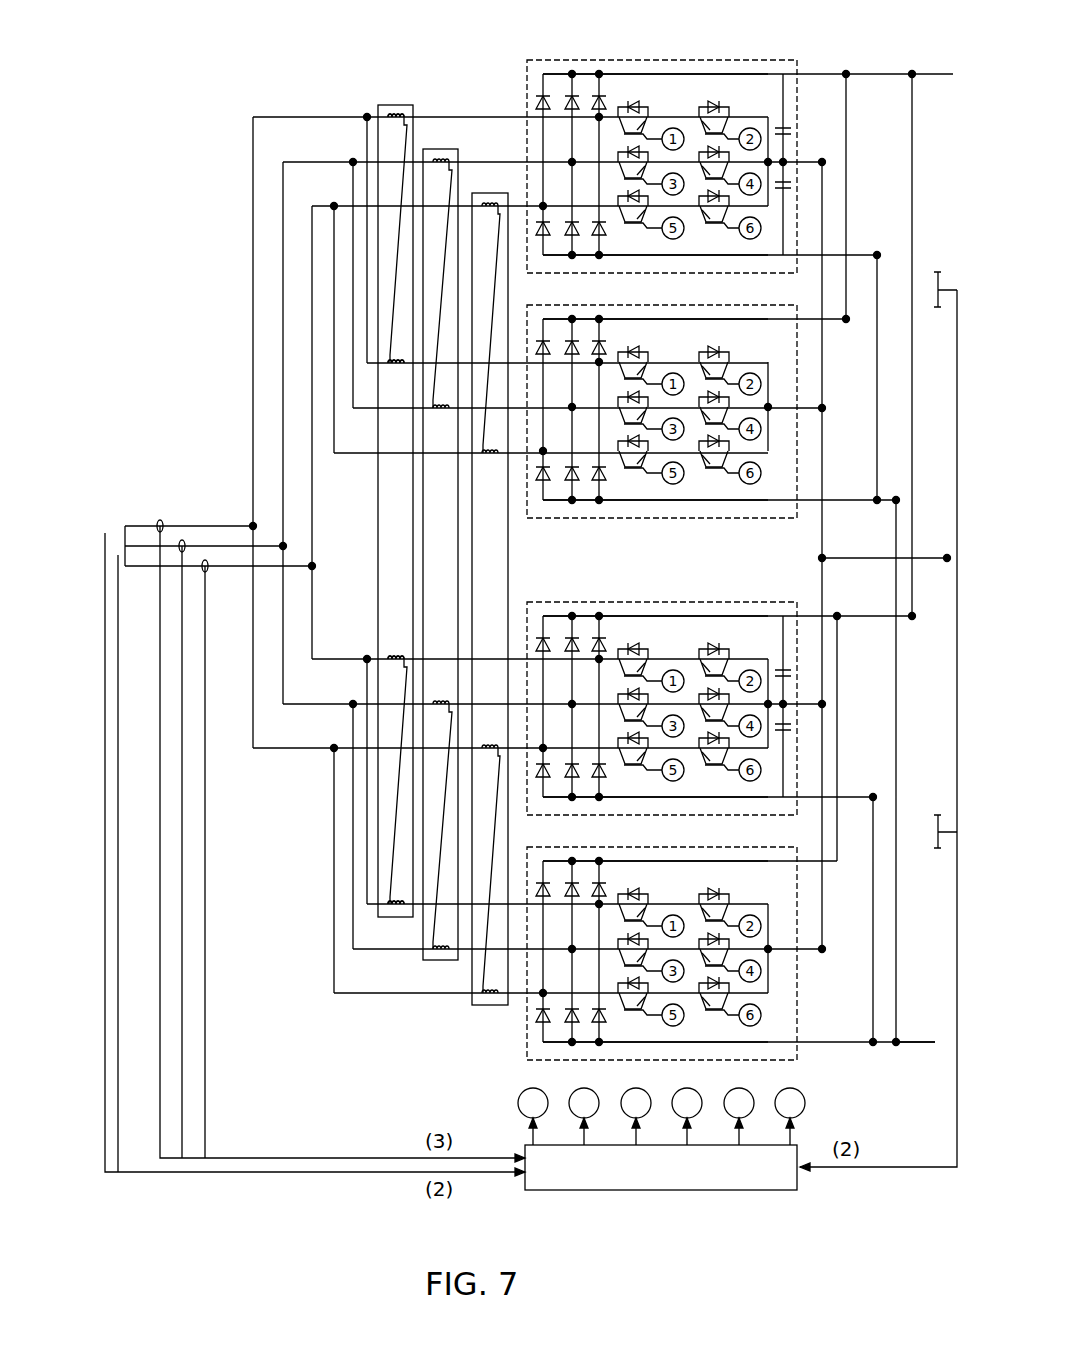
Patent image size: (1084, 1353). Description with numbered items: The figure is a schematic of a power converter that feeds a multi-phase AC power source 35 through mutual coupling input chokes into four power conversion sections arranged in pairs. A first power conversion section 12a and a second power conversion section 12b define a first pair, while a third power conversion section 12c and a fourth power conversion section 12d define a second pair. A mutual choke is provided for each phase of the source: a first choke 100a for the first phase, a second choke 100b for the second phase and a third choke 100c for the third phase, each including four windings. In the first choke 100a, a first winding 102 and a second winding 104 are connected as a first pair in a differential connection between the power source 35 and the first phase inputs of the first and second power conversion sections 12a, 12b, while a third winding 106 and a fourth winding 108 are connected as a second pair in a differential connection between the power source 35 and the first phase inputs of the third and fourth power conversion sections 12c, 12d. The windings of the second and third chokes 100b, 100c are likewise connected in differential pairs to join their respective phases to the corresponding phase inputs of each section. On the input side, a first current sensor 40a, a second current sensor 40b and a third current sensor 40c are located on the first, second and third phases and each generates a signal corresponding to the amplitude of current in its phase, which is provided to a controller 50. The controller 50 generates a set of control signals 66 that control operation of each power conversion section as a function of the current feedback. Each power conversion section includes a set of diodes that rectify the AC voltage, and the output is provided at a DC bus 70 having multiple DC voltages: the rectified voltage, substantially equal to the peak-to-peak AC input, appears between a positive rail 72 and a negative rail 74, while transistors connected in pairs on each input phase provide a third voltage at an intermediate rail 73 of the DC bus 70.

The first power conversion section 12a is at (798, 982).
The second power conversion section 12b is at (798, 764).
The third power conversion section 12c is at (798, 376).
The fourth power conversion section 12d is at (718, 58).
The AC power source 35 is at (85, 500).
The first current sensor 40a is at (164, 512).
The second current sensor 40b is at (188, 532).
The third current sensor 40c is at (200, 580).
The controller 50 is at (666, 1194).
The control signals 66 is at (812, 1118).
The DC bus 70 is at (752, 589).
The positive rail 72 is at (874, 74).
The intermediate rail 73 is at (930, 558).
The negative rail 74 is at (912, 1042).
The first choke 100a is at (401, 104).
The second choke 100b is at (444, 146).
The third choke 100c is at (490, 192).
The first winding 102 is at (390, 895).
The second winding 104 is at (395, 646).
The third winding 106 is at (390, 350).
The fourth winding 108 is at (382, 100).